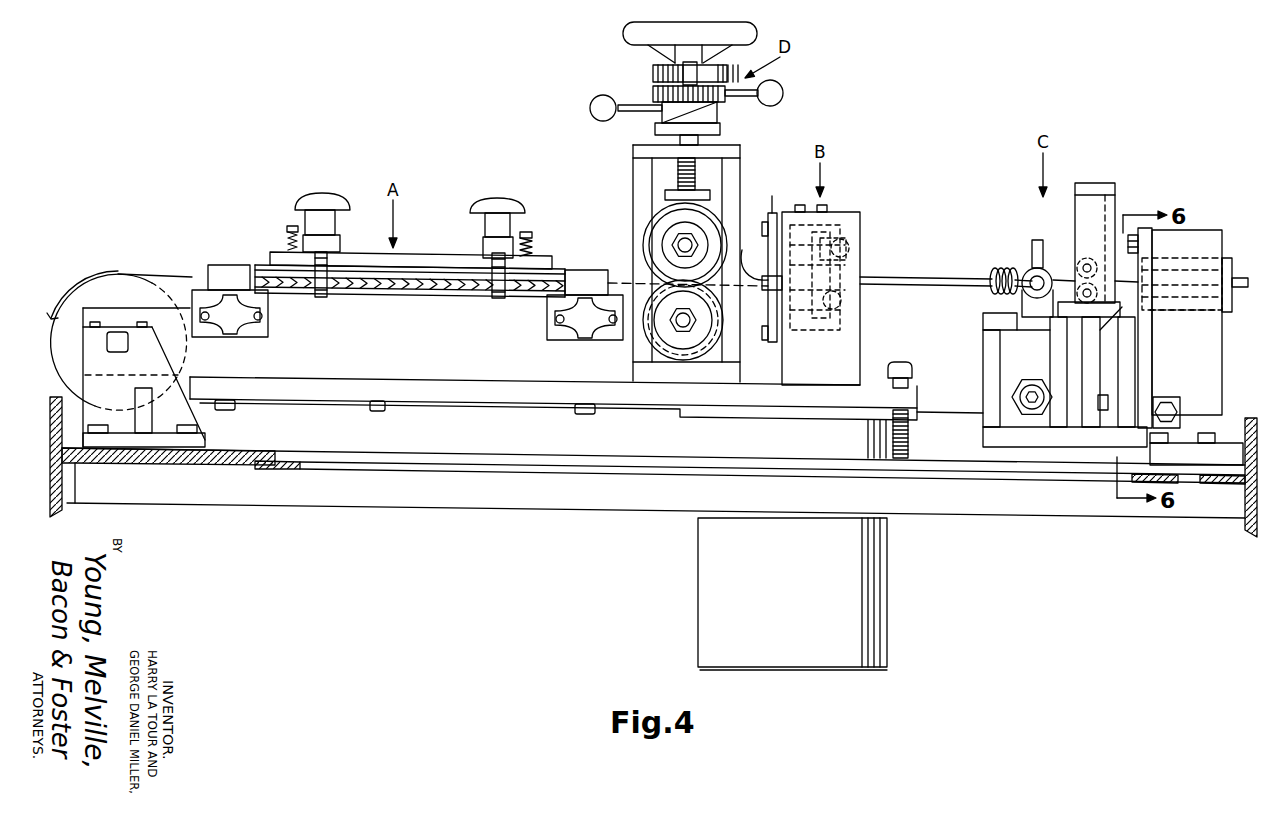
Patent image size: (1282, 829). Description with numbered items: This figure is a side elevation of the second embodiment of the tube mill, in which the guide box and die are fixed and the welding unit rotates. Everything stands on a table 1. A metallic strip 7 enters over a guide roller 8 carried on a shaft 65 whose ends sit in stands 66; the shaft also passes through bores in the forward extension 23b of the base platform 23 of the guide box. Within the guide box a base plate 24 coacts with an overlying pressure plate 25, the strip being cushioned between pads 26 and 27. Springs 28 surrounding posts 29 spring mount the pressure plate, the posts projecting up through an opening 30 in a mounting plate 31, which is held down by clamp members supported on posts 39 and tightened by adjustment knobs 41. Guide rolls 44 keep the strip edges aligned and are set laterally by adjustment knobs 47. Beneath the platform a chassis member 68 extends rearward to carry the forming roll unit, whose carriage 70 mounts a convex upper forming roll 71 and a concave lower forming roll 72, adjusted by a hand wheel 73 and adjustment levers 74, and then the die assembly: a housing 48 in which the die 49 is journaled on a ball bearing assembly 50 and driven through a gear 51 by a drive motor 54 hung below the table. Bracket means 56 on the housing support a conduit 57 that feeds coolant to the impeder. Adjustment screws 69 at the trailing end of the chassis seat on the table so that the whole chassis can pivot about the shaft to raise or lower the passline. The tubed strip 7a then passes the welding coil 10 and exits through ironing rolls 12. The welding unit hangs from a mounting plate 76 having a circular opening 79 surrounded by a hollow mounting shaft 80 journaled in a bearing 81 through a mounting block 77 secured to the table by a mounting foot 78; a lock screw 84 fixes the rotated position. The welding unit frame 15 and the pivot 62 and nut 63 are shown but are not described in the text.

The table 1 is at (367, 460).
The metallic strip 7 is at (143, 276).
The tubed strip 7a is at (940, 278).
The guide roller 8 is at (104, 290).
The high-frequency induction welding coil 10 is at (1002, 269).
The ironing rolls 12 is at (1074, 252).
The frame 15 is at (1033, 438).
The base platform 23 is at (408, 362).
The forwardly projecting extension 23b is at (168, 326).
The base plate 24 is at (400, 294).
The pressure plate 25 is at (402, 270).
The pad 26 is at (418, 291).
The pad 27 is at (447, 277).
The spring 28 is at (532, 252).
The post 29 is at (290, 229).
The opening 30 is at (288, 243).
The mounting plate 31 is at (357, 256).
The post 39 is at (318, 296).
The adjustment knob 41 is at (323, 199).
The guide rolls 44 is at (221, 268).
The adjustment knob 47 is at (238, 308).
The housing 48 is at (858, 221).
The die 49 is at (787, 304).
The ball bearing assembly 50 is at (863, 241).
The gear 51 is at (830, 228).
The drive motor 54 is at (890, 571).
The bracket means 56 is at (775, 194).
The conduit 57 is at (743, 250).
The pivot 62 is at (1035, 298).
The nut 63 is at (1032, 385).
The shaft 65 is at (119, 344).
The stand 66 is at (185, 414).
The chassis member 68 is at (482, 394).
The adjustment screw 69 is at (900, 365).
The carriage 70 is at (638, 183).
The forming roll 71 is at (650, 228).
The forming roll 72 is at (672, 357).
The hand wheel 73 is at (625, 33).
The adjustment lever 74 is at (590, 107).
The mounting plate 76 is at (1145, 237).
The mounting block 77 is at (1202, 238).
The mounting foot 78 is at (1230, 458).
The circular opening 79 is at (1142, 271).
The hollow mounting shaft 80 is at (1224, 262).
The bearing 81 is at (1182, 313).
The lock screw 84 is at (1133, 233).